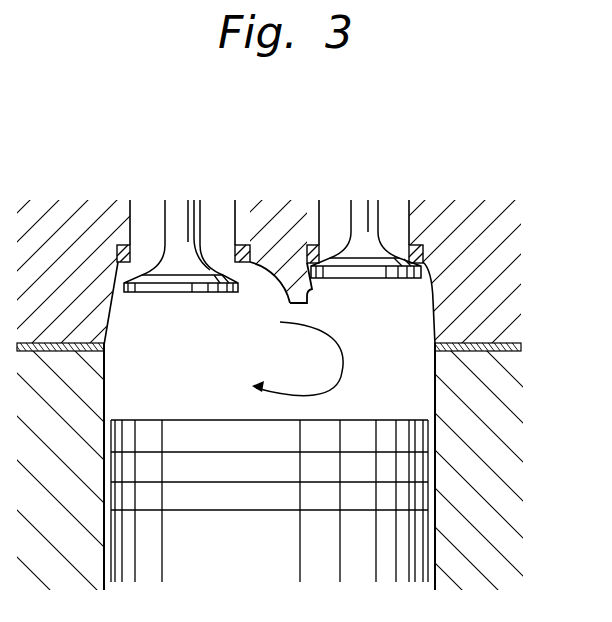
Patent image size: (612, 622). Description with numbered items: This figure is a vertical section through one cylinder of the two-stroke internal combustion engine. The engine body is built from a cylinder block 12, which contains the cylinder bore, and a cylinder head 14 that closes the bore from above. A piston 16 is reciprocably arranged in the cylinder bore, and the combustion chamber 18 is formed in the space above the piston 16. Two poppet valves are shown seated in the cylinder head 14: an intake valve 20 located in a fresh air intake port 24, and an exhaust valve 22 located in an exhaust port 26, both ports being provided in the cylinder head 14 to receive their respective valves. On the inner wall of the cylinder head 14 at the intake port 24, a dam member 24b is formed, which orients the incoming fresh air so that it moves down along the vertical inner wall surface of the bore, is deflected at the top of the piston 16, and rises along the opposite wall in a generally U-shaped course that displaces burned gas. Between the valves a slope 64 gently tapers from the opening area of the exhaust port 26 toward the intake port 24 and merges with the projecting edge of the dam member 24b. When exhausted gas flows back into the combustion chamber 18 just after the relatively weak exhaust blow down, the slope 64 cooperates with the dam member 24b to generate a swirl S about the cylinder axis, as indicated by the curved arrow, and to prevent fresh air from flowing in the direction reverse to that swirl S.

The cylinder block 12 is at (503, 488).
The cylinder head 14 is at (508, 265).
The piston 16 is at (405, 563).
The combustion chamber 18 is at (427, 402).
The intake valve 20 is at (383, 223).
The exhaust valve 22 is at (170, 249).
The fresh air intake port 24 is at (399, 225).
The dam member 24b is at (314, 299).
The exhaust port 26 is at (147, 213).
The slope 64 is at (268, 272).
The swirl S is at (297, 359).